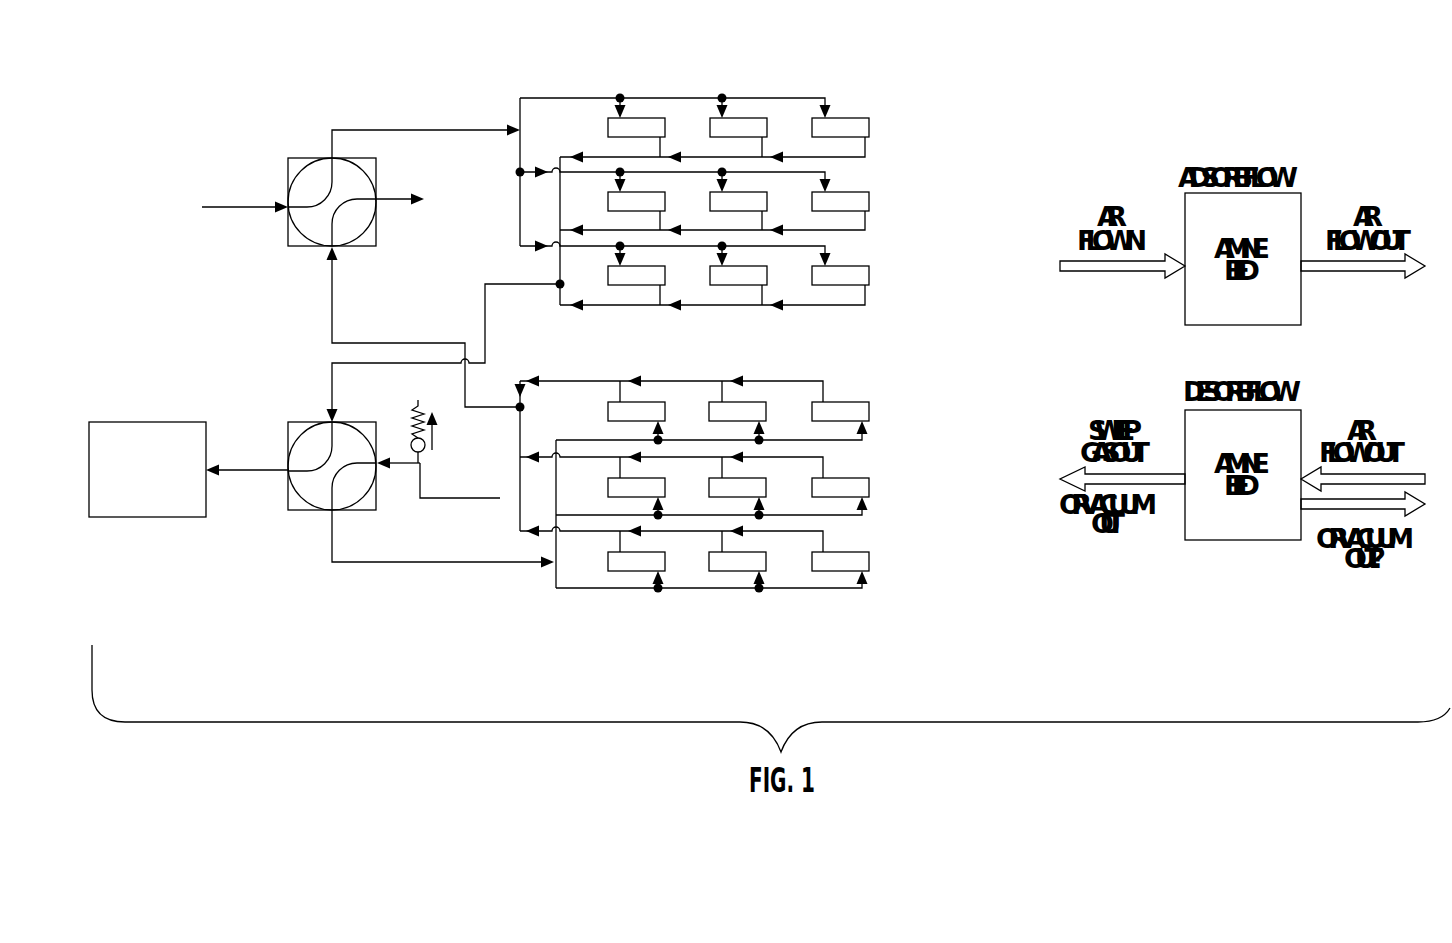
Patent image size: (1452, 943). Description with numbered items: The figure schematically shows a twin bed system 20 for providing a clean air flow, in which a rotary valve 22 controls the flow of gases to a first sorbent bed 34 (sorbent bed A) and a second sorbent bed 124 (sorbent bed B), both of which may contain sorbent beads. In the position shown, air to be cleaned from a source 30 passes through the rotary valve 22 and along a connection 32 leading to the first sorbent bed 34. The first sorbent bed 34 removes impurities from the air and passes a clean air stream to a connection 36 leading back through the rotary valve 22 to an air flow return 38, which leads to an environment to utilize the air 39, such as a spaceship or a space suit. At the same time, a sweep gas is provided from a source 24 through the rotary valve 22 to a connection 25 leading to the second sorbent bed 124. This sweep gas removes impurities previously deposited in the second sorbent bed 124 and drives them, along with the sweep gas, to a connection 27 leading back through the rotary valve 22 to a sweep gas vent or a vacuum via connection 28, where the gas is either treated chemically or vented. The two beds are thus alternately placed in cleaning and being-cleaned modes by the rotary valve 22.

The system 20 is at (236, 116).
The rotary valve 22 is at (288, 233).
The source of sweep gas 24 is at (438, 502).
The connection 25 is at (598, 590).
The connection 27 is at (653, 381).
The connection 28 is at (390, 200).
The source of air 30 is at (233, 207).
The connection 32 is at (408, 130).
The first sorbent bed 34 is at (908, 148).
The connection 36 is at (527, 288).
The air flow return 38 is at (233, 470).
The environment to utilize the air 39 is at (157, 422).
The second sorbent bed 124 is at (734, 488).